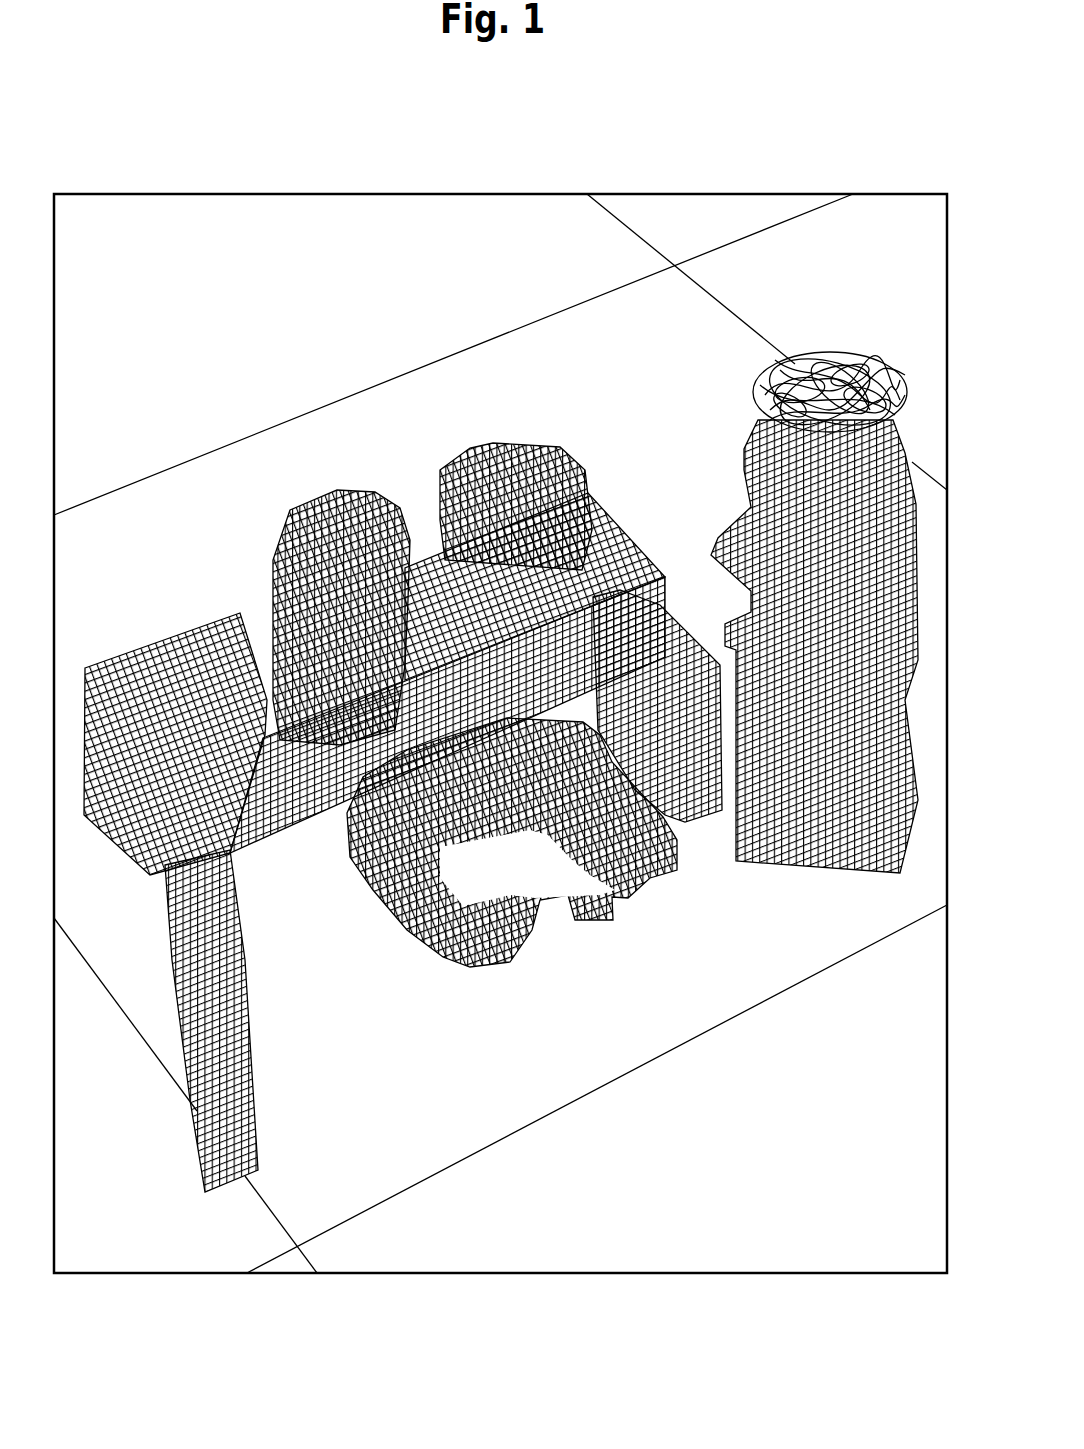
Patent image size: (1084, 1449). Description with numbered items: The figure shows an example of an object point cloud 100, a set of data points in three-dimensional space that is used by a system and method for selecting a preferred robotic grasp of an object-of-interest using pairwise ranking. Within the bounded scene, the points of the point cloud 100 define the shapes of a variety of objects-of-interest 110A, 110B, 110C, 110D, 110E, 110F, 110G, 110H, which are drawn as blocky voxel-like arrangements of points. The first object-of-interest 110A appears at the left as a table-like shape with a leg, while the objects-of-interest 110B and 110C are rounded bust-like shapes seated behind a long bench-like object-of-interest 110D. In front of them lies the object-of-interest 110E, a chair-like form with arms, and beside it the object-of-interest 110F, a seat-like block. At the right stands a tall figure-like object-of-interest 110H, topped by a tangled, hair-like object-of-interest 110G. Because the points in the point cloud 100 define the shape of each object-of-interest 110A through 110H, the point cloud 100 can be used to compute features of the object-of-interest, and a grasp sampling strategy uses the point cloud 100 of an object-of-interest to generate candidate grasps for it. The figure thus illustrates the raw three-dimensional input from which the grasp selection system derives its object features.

The point cloud 100 is at (206, 258).
The object-of-interest 110A is at (240, 1162).
The object-of-interest 110B is at (357, 490).
The object-of-interest 110C is at (518, 443).
The object-of-interest 110D is at (313, 830).
The object-of-interest 110E is at (478, 963).
The object-of-interest 110F is at (718, 815).
The object-of-interest 110G is at (830, 360).
The object-of-interest 110H is at (905, 472).